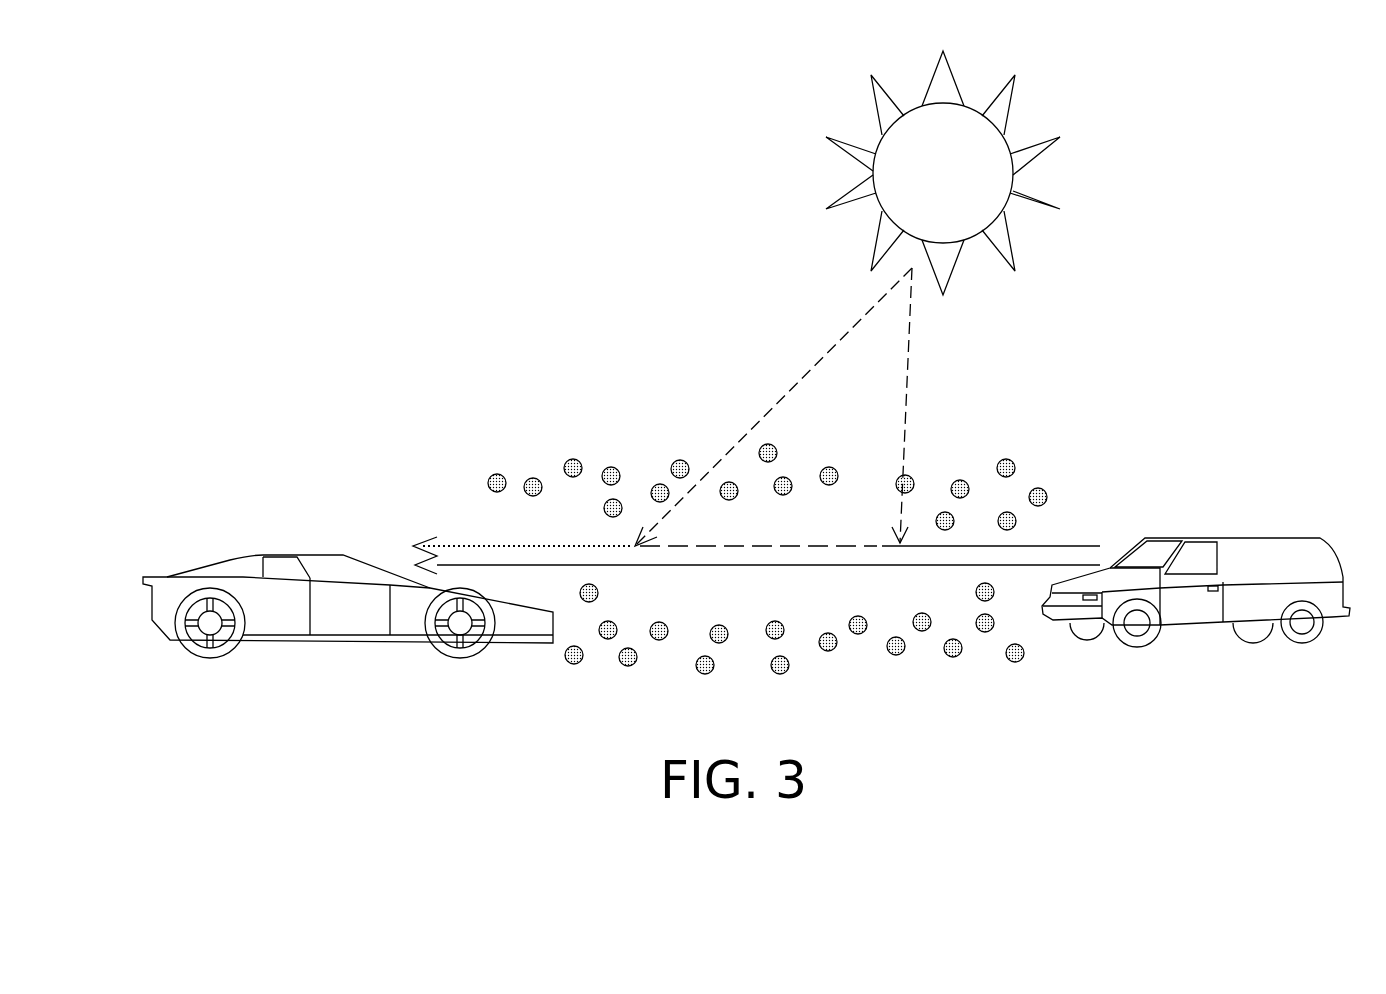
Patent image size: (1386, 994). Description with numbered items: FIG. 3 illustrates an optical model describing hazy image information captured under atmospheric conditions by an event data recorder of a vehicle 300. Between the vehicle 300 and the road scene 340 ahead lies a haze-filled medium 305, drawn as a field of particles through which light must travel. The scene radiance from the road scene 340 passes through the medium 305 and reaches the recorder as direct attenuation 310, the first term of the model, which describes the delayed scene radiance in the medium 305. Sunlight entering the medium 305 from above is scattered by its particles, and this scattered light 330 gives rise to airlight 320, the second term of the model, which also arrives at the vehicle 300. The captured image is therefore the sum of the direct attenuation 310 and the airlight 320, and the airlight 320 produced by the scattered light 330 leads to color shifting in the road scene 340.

The vehicle 300 is at (322, 553).
The medium 305 is at (612, 467).
The direct attenuation 310 is at (763, 567).
The airlight 320 is at (455, 542).
The scattered light 330 is at (805, 545).
The road scene 340 is at (1258, 535).